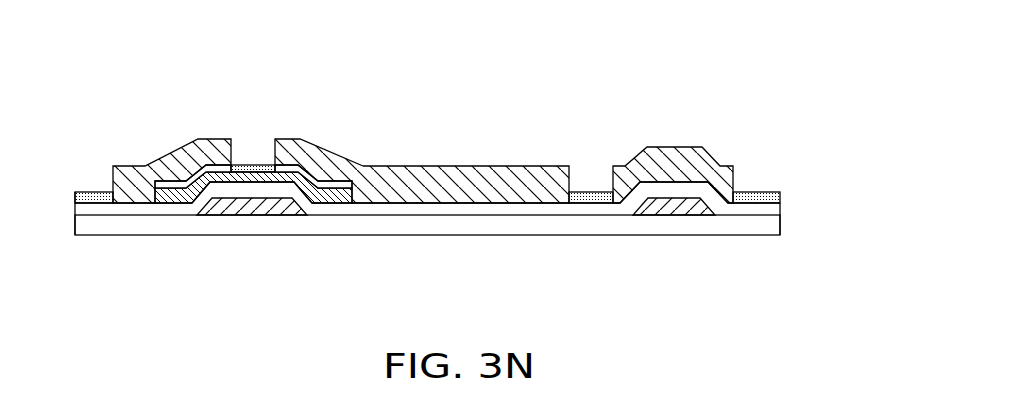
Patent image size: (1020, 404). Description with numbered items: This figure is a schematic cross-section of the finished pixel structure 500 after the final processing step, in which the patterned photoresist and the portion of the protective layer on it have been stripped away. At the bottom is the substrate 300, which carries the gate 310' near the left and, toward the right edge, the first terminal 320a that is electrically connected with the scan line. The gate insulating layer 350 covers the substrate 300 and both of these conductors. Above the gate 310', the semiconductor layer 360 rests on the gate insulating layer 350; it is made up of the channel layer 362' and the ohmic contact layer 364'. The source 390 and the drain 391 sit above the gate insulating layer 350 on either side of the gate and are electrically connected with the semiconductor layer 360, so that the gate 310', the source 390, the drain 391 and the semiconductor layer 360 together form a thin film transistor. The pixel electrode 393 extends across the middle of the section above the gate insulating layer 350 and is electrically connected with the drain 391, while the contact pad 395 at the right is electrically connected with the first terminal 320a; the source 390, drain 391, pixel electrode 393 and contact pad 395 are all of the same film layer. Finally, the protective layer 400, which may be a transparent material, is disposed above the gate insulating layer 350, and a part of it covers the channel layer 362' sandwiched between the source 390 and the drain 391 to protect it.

The substrate 300 is at (777, 226).
The gate 310' is at (252, 244).
The first terminal 320a is at (663, 207).
The gate insulating layer 350 is at (778, 210).
The semiconductor layer 360 is at (253, 103).
The channel layer 362' is at (193, 123).
The ohmic contact layer 364' is at (310, 123).
The source 390 is at (160, 166).
The drain 391 is at (338, 163).
The pixel electrode 393 is at (550, 188).
The contact pad 395 is at (730, 173).
The protective layer 400 is at (86, 192).
The pixel structure 500 is at (783, 315).